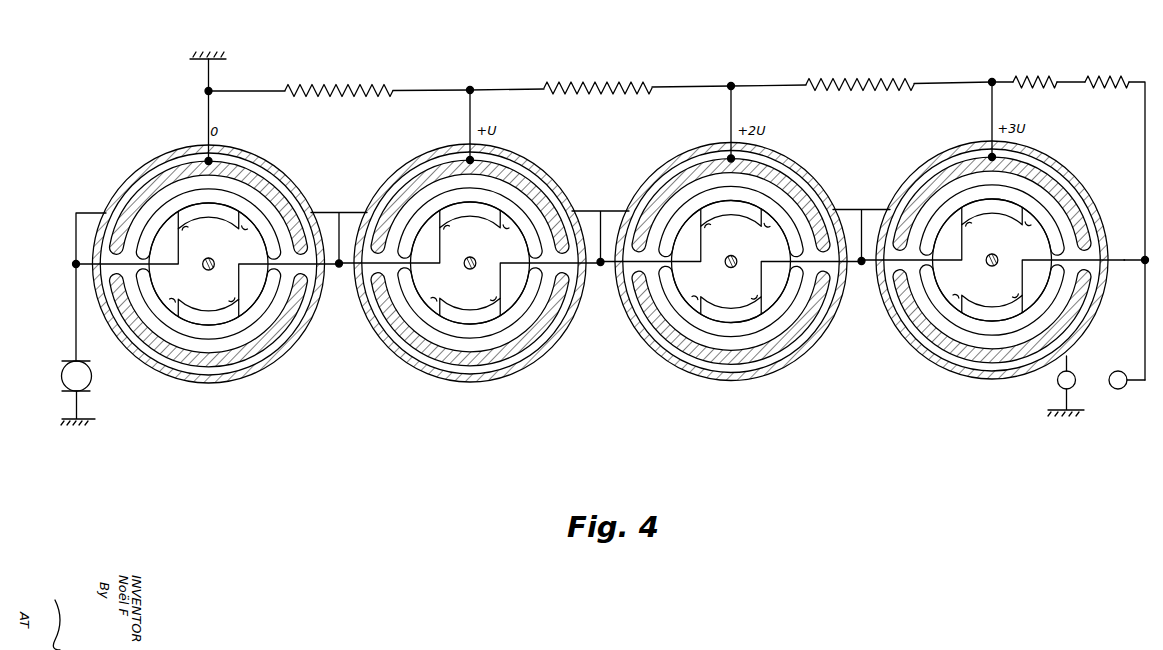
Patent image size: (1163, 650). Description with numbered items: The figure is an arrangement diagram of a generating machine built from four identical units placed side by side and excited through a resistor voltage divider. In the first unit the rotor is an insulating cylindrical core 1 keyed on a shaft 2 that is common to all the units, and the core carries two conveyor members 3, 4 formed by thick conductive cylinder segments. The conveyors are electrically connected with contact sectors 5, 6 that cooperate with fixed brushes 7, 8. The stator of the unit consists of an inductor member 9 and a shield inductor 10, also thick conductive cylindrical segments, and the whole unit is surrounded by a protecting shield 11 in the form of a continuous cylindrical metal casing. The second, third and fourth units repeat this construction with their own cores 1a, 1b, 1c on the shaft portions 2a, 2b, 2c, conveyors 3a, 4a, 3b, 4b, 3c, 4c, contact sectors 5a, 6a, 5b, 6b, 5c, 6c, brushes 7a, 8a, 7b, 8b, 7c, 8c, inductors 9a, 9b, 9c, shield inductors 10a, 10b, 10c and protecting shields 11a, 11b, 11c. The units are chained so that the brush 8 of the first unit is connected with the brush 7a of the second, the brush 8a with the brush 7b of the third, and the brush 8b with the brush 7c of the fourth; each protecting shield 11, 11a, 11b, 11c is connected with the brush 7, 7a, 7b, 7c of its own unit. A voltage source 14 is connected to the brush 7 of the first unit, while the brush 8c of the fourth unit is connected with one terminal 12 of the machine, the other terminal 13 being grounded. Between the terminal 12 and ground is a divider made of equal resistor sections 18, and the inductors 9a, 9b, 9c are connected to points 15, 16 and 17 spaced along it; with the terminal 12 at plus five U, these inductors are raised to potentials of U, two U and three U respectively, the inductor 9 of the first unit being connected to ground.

The insulating cylindrical core 1 is at (189, 286).
The shaft 2 is at (254, 205).
The conveyor member 3 is at (208, 191).
The conveyor member 4 is at (208, 328).
The contact sector 5 is at (196, 176).
The contact sector 6 is at (240, 336).
The brush 7 is at (127, 211).
The brush 8 is at (289, 299).
The inductor member 9 is at (222, 207).
The shield inductor 10 is at (209, 339).
The protecting shield 11 is at (208, 276).
The insulating cylindrical core 1a is at (435, 276).
The shaft 2a is at (512, 206).
The conveyor member 3a is at (470, 192).
The conveyor member 4a is at (456, 326).
The contact sector 5a is at (450, 180).
The contact sector 6a is at (498, 336).
The brush 7a is at (388, 213).
The brush 8a is at (550, 298).
The inductor member 9a is at (479, 206).
The shield inductor 10a is at (470, 338).
The protecting shield 11a is at (470, 275).
The insulating cylindrical core 1b is at (699, 277).
The shaft 2b is at (780, 210).
The conveyor member 3b is at (731, 191).
The conveyor member 4b is at (723, 328).
The contact sector 5b is at (716, 178).
The contact sector 6b is at (758, 339).
The brush 7b is at (649, 212).
The brush 8b is at (811, 305).
The inductor member 9b is at (745, 205).
The shield inductor 10b is at (731, 338).
The protecting shield 11b is at (731, 277).
The insulating cylindrical core 1c is at (959, 276).
The shaft 2c is at (1036, 207).
The conveyor member 3c is at (992, 189).
The conveyor member 4c is at (982, 327).
The contact sector 5c is at (979, 175).
The contact sector 6c is at (998, 340).
The brush 7c is at (910, 212).
The brush 8c is at (1072, 296).
The inductor member 9c is at (1009, 203).
The shield inductor 10c is at (992, 335).
The protecting shield 11c is at (992, 274).
The terminal 12 is at (1125, 388).
The terminal 13 is at (1073, 385).
The voltage source 14 is at (85, 378).
The point 15 is at (471, 89).
The point 16 is at (732, 85).
The point 17 is at (992, 81).
The resistor sections 18 is at (344, 90).